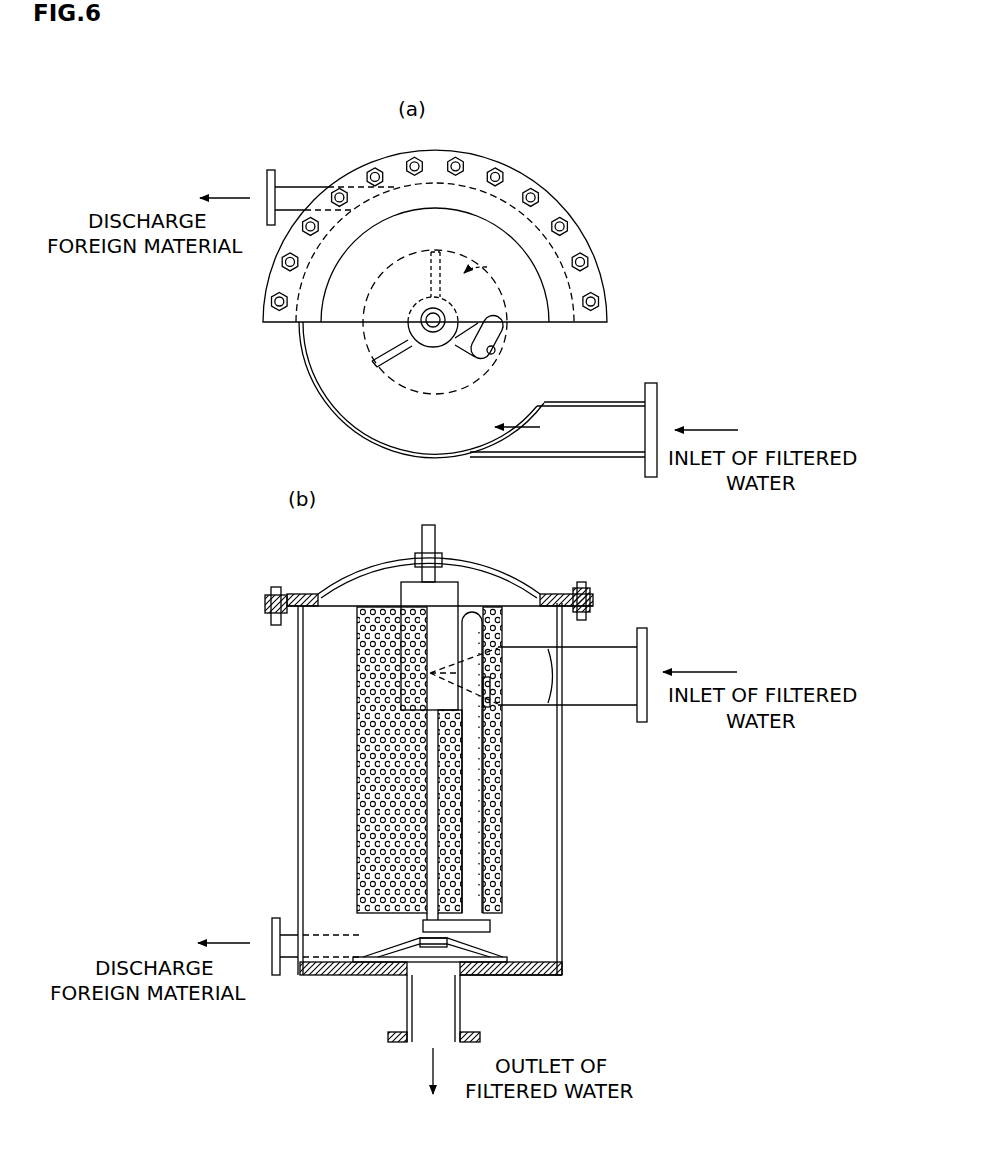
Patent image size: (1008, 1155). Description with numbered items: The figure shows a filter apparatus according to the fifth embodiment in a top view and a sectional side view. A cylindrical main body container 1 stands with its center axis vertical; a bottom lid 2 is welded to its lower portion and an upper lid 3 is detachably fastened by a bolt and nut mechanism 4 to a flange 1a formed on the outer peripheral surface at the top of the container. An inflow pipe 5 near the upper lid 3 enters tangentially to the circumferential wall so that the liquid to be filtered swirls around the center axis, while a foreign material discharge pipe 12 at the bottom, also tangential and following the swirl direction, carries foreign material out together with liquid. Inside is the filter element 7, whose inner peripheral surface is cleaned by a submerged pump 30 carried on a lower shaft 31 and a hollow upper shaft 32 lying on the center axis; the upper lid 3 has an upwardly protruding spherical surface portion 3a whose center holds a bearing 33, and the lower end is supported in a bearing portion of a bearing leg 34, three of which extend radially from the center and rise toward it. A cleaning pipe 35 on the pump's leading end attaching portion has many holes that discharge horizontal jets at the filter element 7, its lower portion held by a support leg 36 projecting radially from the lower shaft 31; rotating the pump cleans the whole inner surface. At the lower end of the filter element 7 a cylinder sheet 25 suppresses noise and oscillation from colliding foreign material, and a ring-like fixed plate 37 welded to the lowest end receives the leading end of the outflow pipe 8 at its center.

The main body container 1 is at (310, 398).
The flange 1a is at (267, 615).
The bottom lid 2 is at (322, 976).
The upper lid 3 is at (583, 247).
The spherical surface portion 3a is at (487, 240).
The bolt and nut mechanism 4 is at (562, 222).
The inflow pipe 5 is at (607, 403).
The filter element 7 is at (508, 776).
The outflow pipe 8 is at (465, 1006).
The foreign material discharge pipe 12 is at (302, 187).
The cylinder sheet 25 is at (504, 930).
The submerged pump 30 is at (503, 326).
The lower shaft 31 is at (432, 816).
The upper shaft 32 is at (432, 319).
The bearing 33 is at (430, 318).
The bearing leg 34 is at (441, 272).
The cleaning pipe 35 is at (482, 366).
The support leg 36 is at (459, 356).
The fixed plate 37 is at (497, 974).